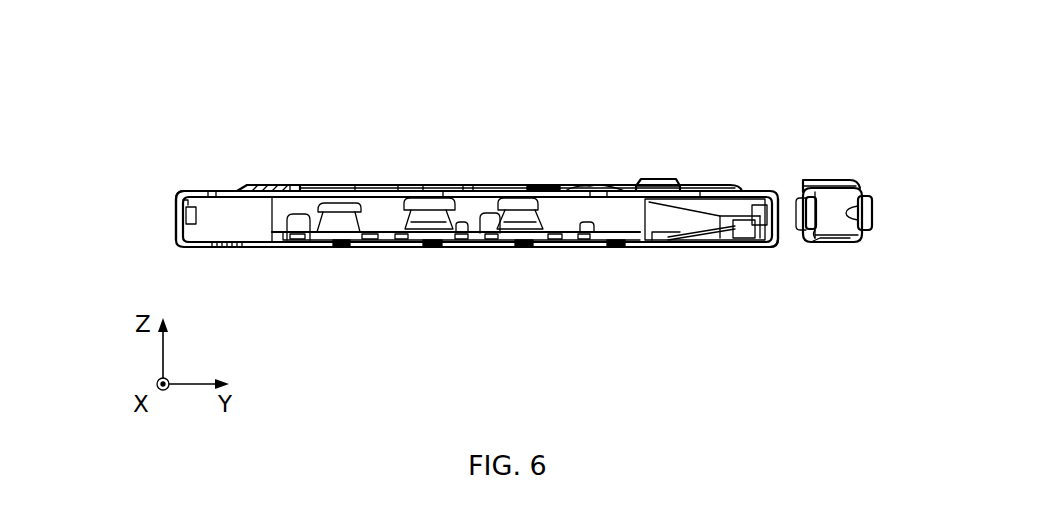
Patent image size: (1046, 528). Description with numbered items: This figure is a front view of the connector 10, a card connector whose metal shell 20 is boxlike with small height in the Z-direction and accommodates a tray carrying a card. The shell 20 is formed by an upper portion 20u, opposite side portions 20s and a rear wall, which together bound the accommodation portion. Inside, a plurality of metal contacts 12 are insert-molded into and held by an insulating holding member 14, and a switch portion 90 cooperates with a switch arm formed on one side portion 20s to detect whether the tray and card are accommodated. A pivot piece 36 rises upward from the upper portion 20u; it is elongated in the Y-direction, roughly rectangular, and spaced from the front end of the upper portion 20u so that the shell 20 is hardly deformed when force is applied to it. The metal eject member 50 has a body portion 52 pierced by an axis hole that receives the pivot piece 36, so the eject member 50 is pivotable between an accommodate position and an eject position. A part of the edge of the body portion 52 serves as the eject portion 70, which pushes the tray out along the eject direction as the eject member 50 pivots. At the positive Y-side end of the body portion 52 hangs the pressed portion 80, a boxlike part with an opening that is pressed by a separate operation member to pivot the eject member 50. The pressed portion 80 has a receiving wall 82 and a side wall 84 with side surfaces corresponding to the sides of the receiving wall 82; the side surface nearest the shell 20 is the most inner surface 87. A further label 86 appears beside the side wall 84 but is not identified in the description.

The connector 10 is at (536, 124).
The shell 20 is at (203, 190).
The upper portion 20u is at (268, 188).
The side portions 20s is at (176, 218).
The eject member 50 is at (483, 185).
The body portion 52 is at (517, 149).
The eject portion 70 is at (408, 185).
The pivot piece 36 is at (655, 179).
The contacts 12 is at (328, 241).
The holding member 14 is at (390, 243).
The switch portion 90 is at (720, 238).
The pressed portion 80 is at (871, 250).
The receiving wall 82 is at (833, 207).
The side wall 84 is at (861, 198).
The terminal notch 86 is at (882, 182).
The most inner surface 87 is at (819, 243).